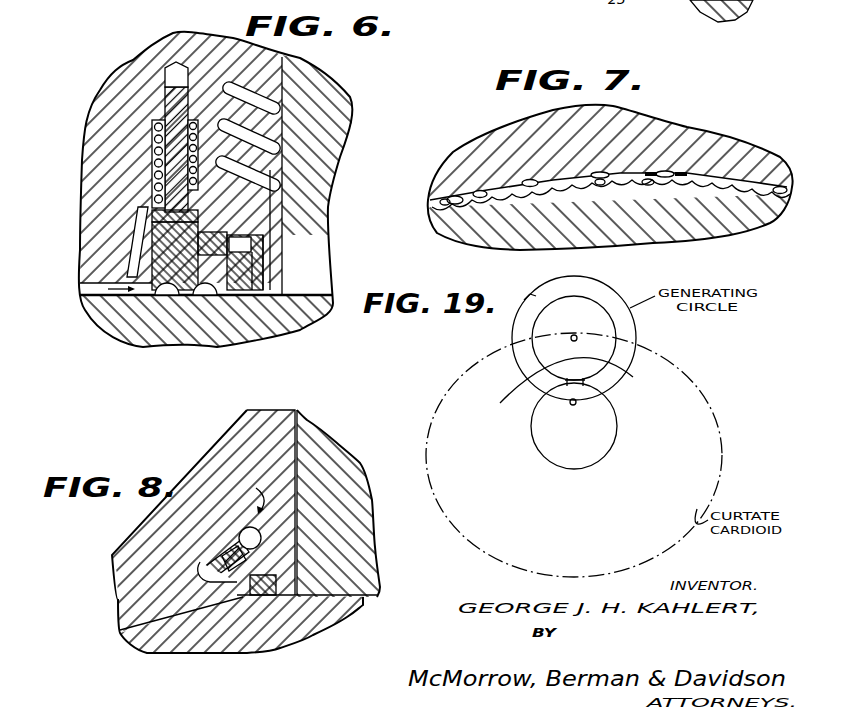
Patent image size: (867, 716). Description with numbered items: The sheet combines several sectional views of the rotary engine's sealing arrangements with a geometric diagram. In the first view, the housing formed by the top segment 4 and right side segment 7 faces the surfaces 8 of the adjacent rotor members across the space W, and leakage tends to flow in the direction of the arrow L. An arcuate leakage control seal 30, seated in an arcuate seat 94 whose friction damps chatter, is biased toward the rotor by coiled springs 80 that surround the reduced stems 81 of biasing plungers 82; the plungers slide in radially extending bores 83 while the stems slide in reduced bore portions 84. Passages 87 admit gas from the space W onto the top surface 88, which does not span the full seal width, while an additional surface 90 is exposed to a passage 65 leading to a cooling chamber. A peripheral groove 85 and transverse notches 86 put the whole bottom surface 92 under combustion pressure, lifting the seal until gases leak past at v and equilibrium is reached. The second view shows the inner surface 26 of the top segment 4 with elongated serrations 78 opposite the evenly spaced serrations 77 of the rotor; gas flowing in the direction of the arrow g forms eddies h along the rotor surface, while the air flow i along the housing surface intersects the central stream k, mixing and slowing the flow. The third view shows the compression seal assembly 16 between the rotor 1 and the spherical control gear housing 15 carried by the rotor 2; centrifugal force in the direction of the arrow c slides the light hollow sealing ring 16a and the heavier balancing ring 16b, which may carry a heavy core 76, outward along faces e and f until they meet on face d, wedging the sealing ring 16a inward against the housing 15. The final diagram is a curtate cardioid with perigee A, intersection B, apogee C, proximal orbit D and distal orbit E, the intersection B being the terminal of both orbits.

In FIG. 6, the top segment 4 is at (135, 66).
In FIG. 7, the top segment 4 is at (730, 142).
In FIG. 6, the reduced bore portions 84 is at (165, 72).
In FIG. 6, the reduced stems 81 is at (192, 68).
In FIG. 6, the right side segment 7 is at (340, 97).
In FIG. 6, the coiled springs 80 is at (165, 122).
In FIG. 6, the bores 83 is at (152, 192).
In FIG. 6, the biasing plungers 82 is at (150, 232).
In FIG. 6, the arcuate seats 94 is at (260, 230).
In FIG. 6, the passages 87 is at (137, 240).
In FIG. 6, the surface 88 is at (187, 213).
In FIG. 6, the passage 65 is at (250, 250).
In FIG. 6, the space W is at (80, 287).
In FIG. 6, the additional surface 90 is at (248, 260).
In FIG. 6, the rotor surfaces 8 is at (310, 297).
In FIG. 6, the arrow indicating leakage direction L is at (98, 297).
In FIG. 6, the rotor 1 is at (103, 320).
In FIG. 7, the rotor 1 is at (716, 217).
In FIG. 8, the rotor 1 is at (194, 527).
In FIG. 6, the leakage control seals 30 is at (160, 275).
In FIG. 6, the leakage point v is at (240, 300).
In FIG. 6, the bottom surface 92 is at (165, 292).
In FIG. 6, the peripheral grooves 85 is at (173, 292).
In FIG. 6, the transversely extending notches 86 is at (203, 297).
In FIG. 7, the serrations 78 is at (650, 170).
In FIG. 7, the inner surface 26 is at (684, 166).
In FIG. 7, the stream of air k is at (668, 168).
In FIG. 7, the arrow indicating gas flow direction g is at (737, 167).
In FIG. 7, the eddies h is at (462, 203).
In FIG. 7, the air flow i is at (601, 180).
In FIG. 7, the serrations 77 is at (648, 180).
In FIG. 8, the balancing ring 16b is at (230, 550).
In FIG. 8, the face f is at (297, 560).
In FIG. 8, the arrow indicating centrifugal force c is at (268, 493).
In FIG. 8, the face e is at (213, 553).
In FIG. 8, the rotor 2 is at (367, 548).
In FIG. 8, the spherical control gear housing 15 is at (358, 600).
In FIG. 8, the sealing ring 16a is at (265, 593).
In FIG. 8, the face d is at (240, 595).
In FIG. 8, the compression seal assembly 16 is at (222, 583).
In FIG. 8, the heavy core 76 is at (222, 582).
In FIG. 19, the perigee A is at (575, 405).
In FIG. 19, the intersection B is at (558, 392).
In FIG. 19, the apogee C is at (567, 575).
In FIG. 19, the proximal orbit D is at (629, 378).
In FIG. 19, the distal orbit E is at (440, 490).